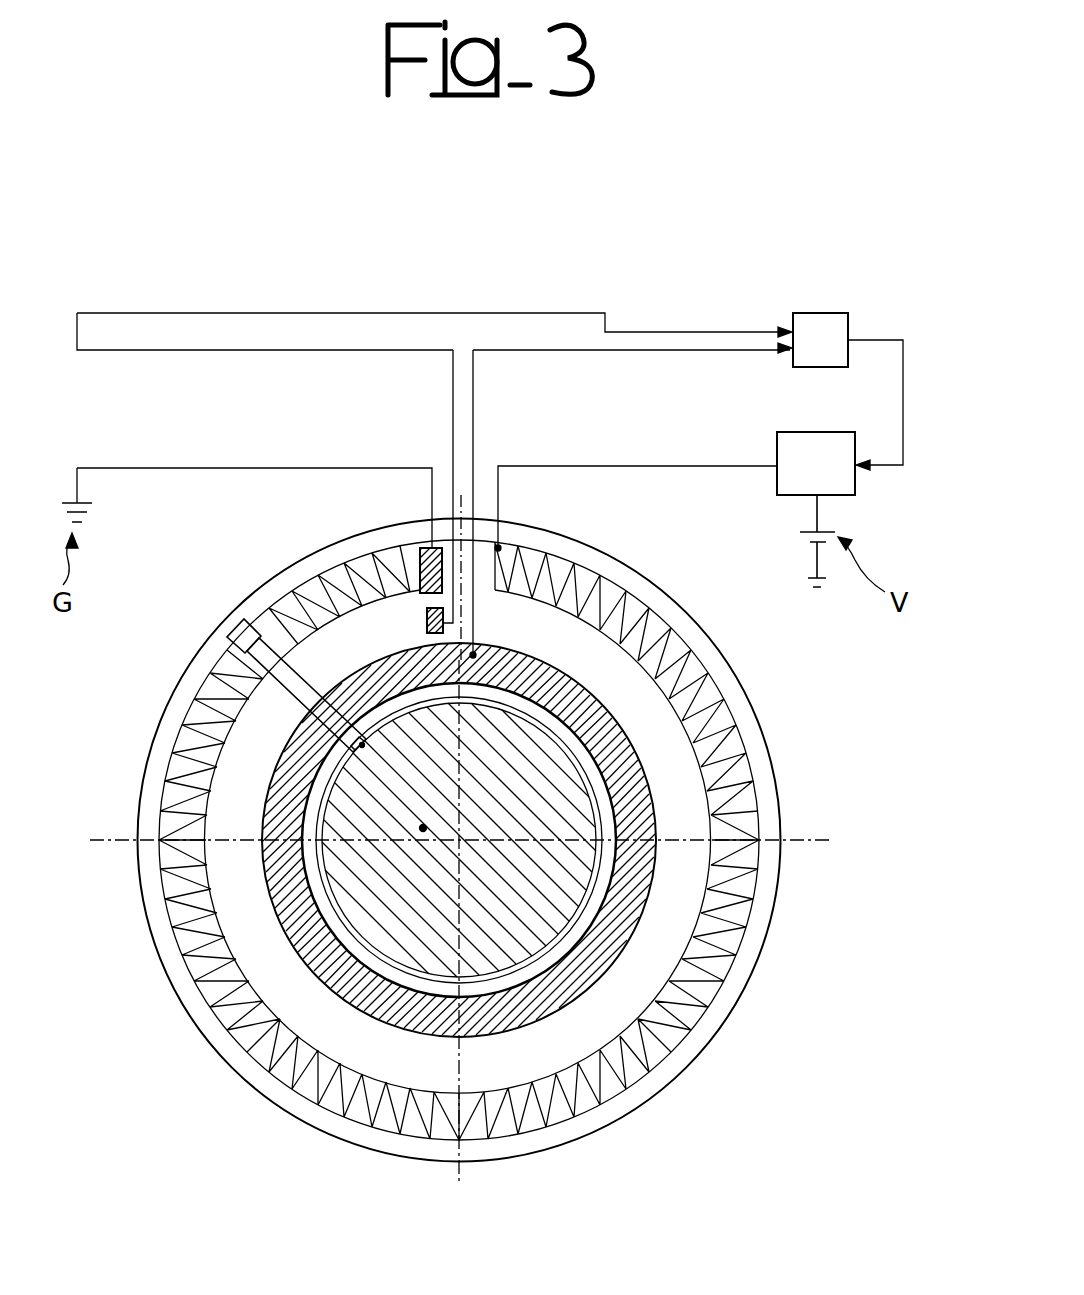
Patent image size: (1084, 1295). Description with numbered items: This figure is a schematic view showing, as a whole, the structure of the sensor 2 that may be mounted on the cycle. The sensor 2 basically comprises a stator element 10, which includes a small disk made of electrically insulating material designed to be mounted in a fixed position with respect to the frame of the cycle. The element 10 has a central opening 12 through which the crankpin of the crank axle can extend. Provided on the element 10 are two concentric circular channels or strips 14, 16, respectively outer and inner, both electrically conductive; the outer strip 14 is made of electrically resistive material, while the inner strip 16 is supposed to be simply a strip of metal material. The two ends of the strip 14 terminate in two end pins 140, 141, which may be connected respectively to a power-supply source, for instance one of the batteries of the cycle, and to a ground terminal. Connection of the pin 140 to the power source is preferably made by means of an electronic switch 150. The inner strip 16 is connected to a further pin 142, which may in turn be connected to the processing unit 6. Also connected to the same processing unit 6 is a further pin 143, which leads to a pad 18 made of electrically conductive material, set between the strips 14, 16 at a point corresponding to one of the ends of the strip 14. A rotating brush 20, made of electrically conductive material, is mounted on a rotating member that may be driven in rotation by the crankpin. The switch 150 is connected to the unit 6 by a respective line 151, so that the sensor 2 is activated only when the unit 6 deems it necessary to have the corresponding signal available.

The sensor 2 is at (470, 852).
The processing unit 6 is at (818, 326).
The stator element 10 is at (698, 1038).
The central opening 12 is at (592, 756).
The outer strip 14 is at (760, 858).
The inner strip 16 is at (618, 922).
The pad 18 is at (427, 628).
The rotating brush 20 is at (282, 695).
The end pin 140 is at (613, 467).
The end pin 141 is at (193, 468).
The pin 142 is at (475, 405).
The pin 143 is at (243, 353).
The electronic switch 150 is at (802, 450).
The line 151 is at (903, 413).